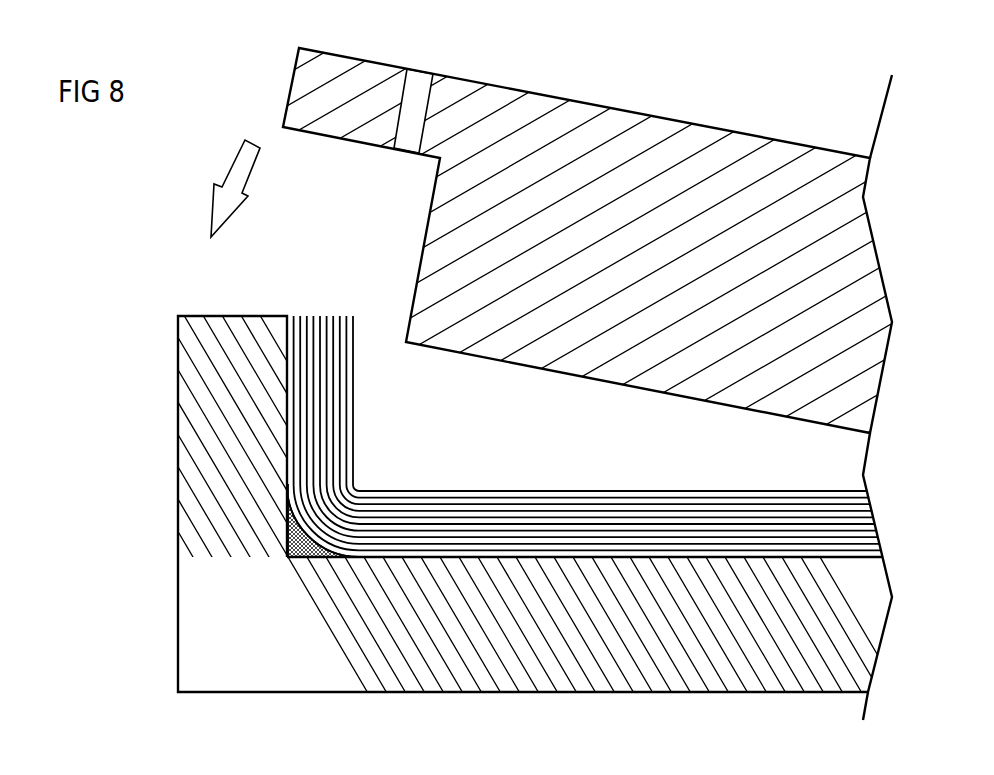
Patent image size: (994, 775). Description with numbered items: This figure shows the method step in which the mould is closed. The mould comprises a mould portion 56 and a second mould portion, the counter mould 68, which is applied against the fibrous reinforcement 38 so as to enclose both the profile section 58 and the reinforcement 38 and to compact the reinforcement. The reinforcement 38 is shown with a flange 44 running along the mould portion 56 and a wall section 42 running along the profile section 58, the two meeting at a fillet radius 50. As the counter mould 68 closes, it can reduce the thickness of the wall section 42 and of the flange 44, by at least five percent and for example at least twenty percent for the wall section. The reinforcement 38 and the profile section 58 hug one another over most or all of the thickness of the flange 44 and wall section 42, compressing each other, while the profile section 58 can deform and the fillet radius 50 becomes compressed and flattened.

The fibrous reinforcement 38 is at (458, 482).
The wall section 42 is at (737, 525).
The flange 44 is at (328, 381).
The fillet radius 50 is at (333, 539).
The mould portion 56 is at (203, 387).
The profile section 58 is at (288, 546).
The counter mould 68 is at (688, 150).